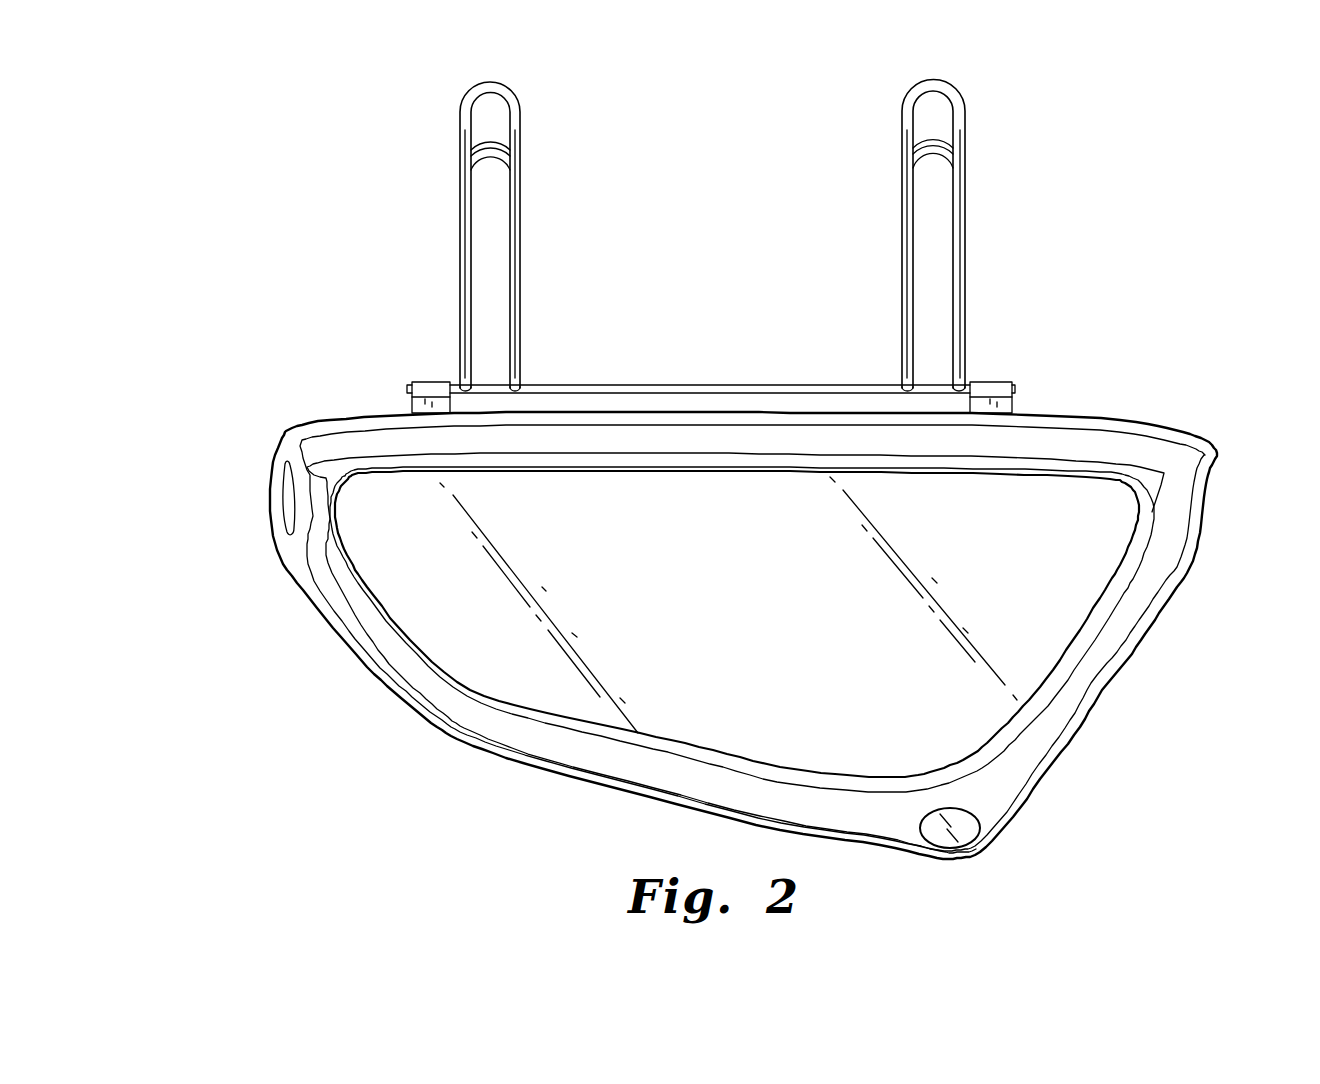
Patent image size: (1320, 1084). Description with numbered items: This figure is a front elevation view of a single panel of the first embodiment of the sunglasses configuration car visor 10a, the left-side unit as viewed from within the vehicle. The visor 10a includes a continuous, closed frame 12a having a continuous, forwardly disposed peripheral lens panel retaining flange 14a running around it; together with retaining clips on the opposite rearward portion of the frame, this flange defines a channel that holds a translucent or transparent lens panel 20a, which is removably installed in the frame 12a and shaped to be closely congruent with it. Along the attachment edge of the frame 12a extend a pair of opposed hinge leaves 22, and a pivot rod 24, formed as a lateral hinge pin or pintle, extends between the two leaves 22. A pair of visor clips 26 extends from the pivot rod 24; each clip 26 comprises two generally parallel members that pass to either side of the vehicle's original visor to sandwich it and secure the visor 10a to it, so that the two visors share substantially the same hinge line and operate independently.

The sunglasses configuration car visor 10a is at (254, 826).
The frame 12a is at (1088, 722).
The peripheral lens panel retaining flange 14a is at (802, 770).
The lens panel 20a is at (733, 583).
The hinge leaves 22 is at (432, 381).
The pivot rod 24 is at (687, 385).
The visor clips 26 is at (490, 143).